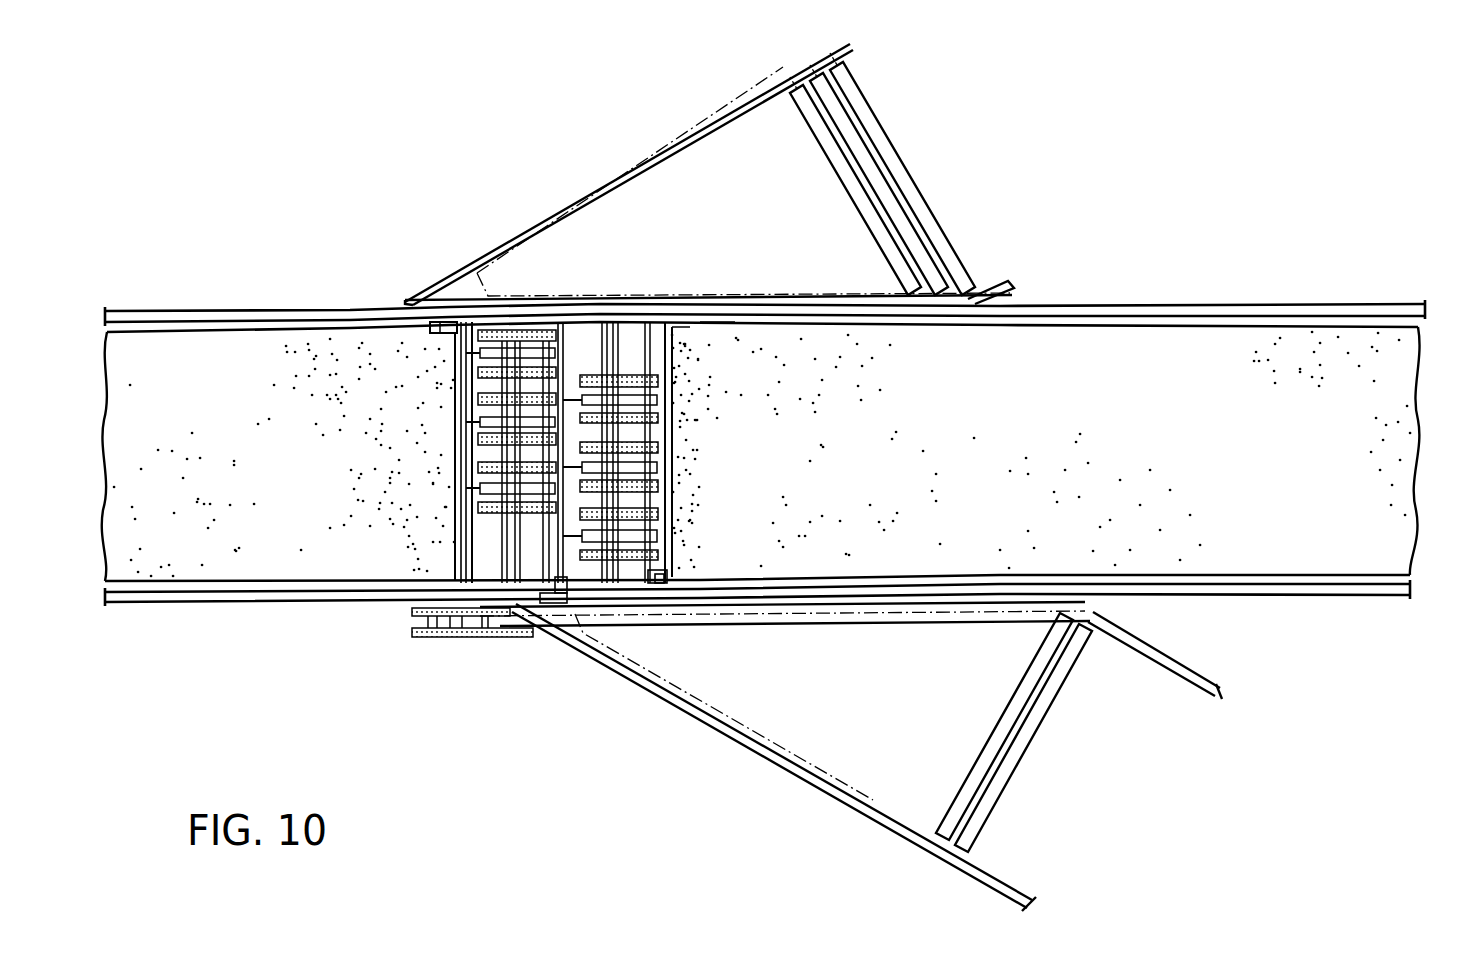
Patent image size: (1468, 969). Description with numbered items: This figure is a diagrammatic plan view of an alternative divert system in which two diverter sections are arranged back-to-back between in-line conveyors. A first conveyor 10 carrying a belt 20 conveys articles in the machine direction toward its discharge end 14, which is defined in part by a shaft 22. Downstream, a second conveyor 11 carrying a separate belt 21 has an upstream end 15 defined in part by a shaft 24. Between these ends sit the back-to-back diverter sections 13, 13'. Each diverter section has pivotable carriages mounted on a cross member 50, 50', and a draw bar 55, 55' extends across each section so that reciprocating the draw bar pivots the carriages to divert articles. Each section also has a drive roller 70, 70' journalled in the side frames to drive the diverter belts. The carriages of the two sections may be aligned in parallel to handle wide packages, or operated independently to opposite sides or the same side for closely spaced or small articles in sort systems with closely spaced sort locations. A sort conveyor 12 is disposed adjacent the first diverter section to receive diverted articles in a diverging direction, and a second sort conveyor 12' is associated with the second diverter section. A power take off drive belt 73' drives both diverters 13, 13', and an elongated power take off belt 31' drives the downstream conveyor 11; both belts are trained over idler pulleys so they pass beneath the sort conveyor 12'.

The first conveyor 10 is at (207, 627).
The second conveyor 11 is at (1318, 248).
The sort conveyor 12 is at (906, 174).
The sort conveyor 12' is at (851, 756).
The diverter 13 is at (511, 421).
The diverter 13' is at (684, 418).
The discharge end 14 is at (428, 528).
The upstream end 15 is at (692, 518).
The belt 20 is at (268, 488).
The belt 21 is at (1202, 462).
The shaft 22 is at (437, 322).
The shaft 24 is at (720, 327).
The power take off belt 31' is at (472, 664).
The cross member 50 is at (515, 462).
The cross member 50' is at (619, 419).
The draw bar 55 is at (517, 440).
The draw bar 55' is at (627, 415).
The drive roller 70 is at (430, 452).
The drive roller 70' is at (604, 487).
The power take off drive belt 73' is at (458, 656).